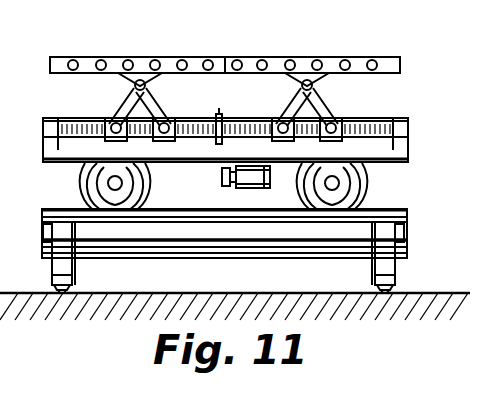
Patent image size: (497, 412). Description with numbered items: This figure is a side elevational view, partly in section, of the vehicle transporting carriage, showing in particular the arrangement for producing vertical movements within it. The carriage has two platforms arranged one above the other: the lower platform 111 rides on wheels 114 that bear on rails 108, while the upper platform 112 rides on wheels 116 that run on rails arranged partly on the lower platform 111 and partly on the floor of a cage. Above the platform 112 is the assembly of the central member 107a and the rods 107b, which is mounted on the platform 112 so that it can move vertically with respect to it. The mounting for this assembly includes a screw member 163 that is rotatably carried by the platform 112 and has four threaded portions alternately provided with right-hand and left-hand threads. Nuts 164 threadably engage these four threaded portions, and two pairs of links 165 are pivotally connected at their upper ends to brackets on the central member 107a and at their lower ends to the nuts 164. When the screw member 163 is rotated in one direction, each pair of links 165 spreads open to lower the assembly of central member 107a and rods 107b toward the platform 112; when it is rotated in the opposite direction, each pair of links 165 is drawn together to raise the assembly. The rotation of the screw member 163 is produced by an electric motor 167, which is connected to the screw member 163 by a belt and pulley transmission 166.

The central member 107a is at (160, 62).
The rods 107b is at (334, 60).
The links 165 is at (146, 96).
The nuts 164 is at (152, 118).
The belt and pulley transmission 166 is at (228, 106).
The screw member 163 is at (228, 118).
The platform 112 is at (213, 154).
The electric motor 167 is at (250, 188).
The wheels 116 is at (90, 188).
The lower platform 111 is at (217, 233).
The wheels 114 is at (50, 260).
The rails 108 is at (56, 284).